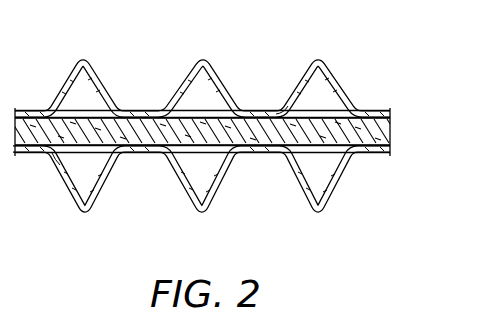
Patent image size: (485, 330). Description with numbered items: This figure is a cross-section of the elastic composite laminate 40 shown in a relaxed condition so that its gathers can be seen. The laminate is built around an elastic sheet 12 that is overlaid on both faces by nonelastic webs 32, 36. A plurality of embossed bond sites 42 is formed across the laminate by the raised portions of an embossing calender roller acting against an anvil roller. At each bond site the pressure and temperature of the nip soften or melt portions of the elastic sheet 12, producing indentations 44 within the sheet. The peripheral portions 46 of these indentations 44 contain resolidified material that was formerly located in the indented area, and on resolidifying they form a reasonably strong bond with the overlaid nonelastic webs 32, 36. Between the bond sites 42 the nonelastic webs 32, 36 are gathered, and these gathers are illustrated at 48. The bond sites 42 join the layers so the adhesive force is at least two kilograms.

The elastic sheet 12 is at (388, 133).
The nonelastic web 32 is at (367, 110).
The nonelastic web 36 is at (371, 156).
The elastic composite laminate 40 is at (365, 40).
The embossed bond sites 42 is at (136, 212).
The indentations 44 is at (134, 114).
The peripheral portions 46 is at (297, 108).
The gathers 48 is at (84, 58).